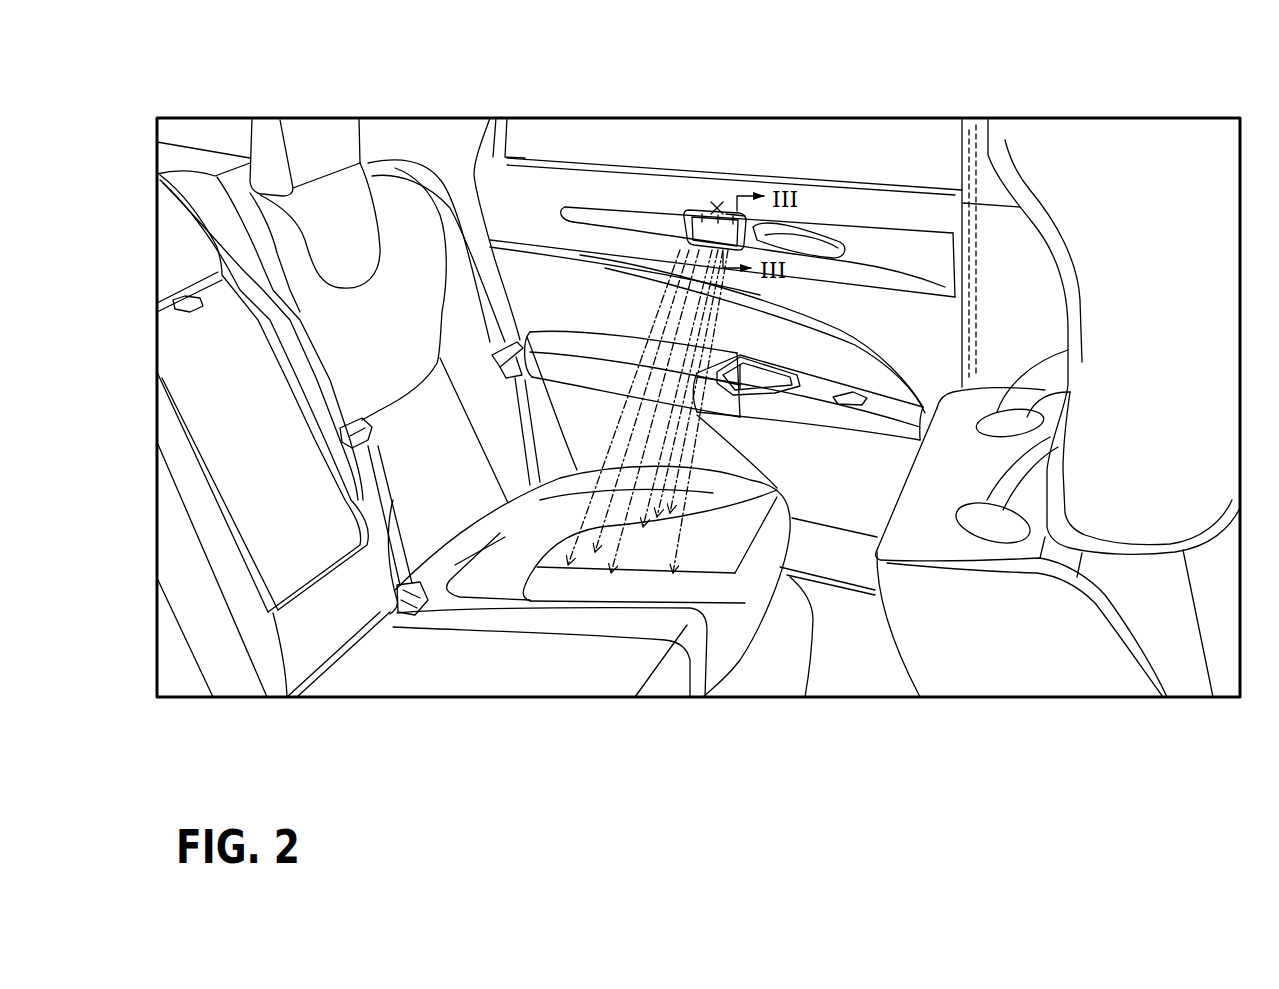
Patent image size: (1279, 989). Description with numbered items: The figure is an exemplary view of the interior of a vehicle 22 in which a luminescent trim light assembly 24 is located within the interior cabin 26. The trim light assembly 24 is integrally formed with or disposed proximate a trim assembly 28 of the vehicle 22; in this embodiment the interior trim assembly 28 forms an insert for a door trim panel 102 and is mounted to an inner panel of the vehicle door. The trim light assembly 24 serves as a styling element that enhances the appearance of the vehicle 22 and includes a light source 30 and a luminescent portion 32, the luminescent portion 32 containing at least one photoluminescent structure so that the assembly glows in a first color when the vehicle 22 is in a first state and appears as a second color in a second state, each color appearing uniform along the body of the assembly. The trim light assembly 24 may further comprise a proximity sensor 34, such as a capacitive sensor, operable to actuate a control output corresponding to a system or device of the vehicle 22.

The vehicle 22 is at (376, 97).
The trim light assembly 24 is at (720, 210).
The interior cabin 26 is at (876, 162).
The trim assembly 28 is at (620, 208).
The light source 30 is at (690, 212).
The luminescent portion 32 is at (715, 204).
The proximity sensor 34 is at (728, 212).
The door trim panel 102 is at (910, 195).